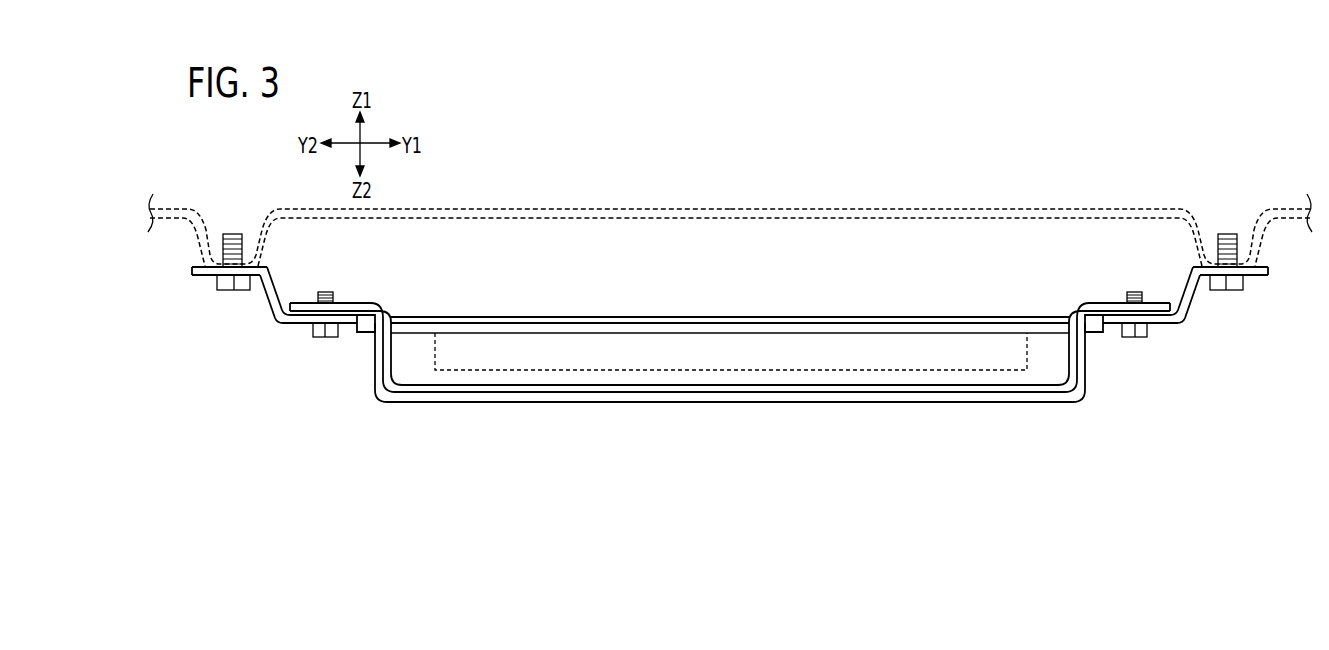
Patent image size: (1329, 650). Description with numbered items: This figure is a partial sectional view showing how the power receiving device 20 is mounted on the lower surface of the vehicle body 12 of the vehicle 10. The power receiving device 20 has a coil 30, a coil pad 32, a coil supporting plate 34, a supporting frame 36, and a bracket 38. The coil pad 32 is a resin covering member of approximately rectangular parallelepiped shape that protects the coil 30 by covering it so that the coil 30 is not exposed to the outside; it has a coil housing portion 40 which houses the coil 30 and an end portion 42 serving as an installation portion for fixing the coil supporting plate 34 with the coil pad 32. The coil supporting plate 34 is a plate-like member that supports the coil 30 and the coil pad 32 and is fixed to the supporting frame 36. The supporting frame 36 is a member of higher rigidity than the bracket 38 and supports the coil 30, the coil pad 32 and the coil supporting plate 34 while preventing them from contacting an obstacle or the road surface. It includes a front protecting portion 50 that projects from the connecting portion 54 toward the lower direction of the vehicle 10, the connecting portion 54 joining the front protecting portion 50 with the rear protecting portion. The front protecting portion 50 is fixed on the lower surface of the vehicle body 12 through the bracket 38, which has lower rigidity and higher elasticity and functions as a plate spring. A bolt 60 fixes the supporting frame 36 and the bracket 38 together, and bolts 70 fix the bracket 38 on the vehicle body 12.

The vehicle 10 is at (1038, 142).
The vehicle body 12 is at (963, 213).
The power receiving device 20 is at (512, 420).
The coil 30 is at (570, 371).
The coil pad 32 is at (730, 372).
The coil supporting plate 34 is at (648, 316).
The supporting frame 36 is at (803, 402).
The bracket 38 is at (201, 276).
The coil housing portion 40 is at (422, 378).
The end portion 42 is at (367, 333).
The front protecting portion 50 is at (730, 354).
The connecting portion 54 is at (347, 305).
The bolt 60 is at (318, 339).
The bolt 70 is at (230, 288).